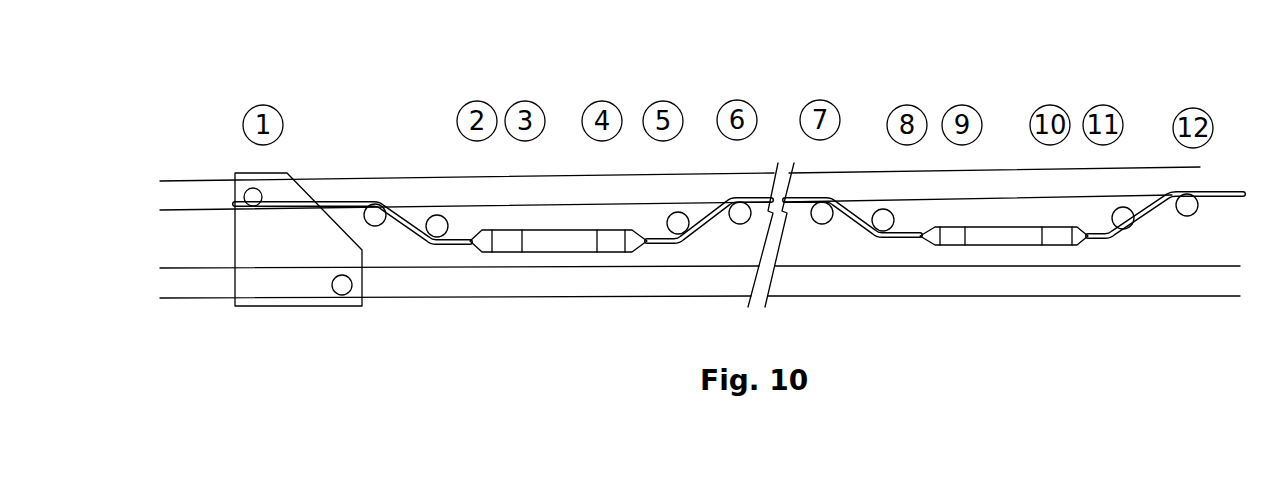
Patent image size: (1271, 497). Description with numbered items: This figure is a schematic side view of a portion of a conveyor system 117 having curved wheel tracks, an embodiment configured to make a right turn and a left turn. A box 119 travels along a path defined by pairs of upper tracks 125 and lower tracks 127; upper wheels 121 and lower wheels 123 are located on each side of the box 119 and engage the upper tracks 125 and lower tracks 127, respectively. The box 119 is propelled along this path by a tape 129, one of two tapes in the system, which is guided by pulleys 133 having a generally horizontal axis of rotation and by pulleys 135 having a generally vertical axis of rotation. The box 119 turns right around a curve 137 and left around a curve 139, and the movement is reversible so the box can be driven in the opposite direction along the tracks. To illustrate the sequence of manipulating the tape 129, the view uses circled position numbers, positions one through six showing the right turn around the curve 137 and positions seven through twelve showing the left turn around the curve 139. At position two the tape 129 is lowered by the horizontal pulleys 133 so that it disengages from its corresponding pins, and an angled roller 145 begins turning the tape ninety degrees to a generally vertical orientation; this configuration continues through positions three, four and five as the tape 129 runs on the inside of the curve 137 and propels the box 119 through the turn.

The conveyor system 117 is at (700, 265).
The box 119 is at (313, 243).
The upper wheels 121 is at (249, 190).
The lower wheels 123 is at (343, 296).
The upper tracks 125 is at (410, 193).
The lower tracks 127 is at (403, 287).
The tape 129 is at (572, 243).
The pulleys 133 is at (371, 204).
The pulleys 135 is at (510, 250).
The curve 137 is at (548, 297).
The curve 139 is at (1028, 295).
The angled roller 145 is at (434, 215).